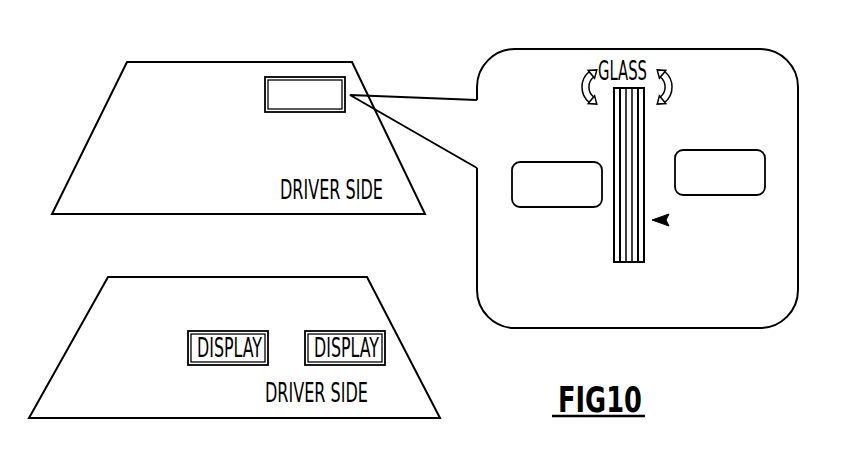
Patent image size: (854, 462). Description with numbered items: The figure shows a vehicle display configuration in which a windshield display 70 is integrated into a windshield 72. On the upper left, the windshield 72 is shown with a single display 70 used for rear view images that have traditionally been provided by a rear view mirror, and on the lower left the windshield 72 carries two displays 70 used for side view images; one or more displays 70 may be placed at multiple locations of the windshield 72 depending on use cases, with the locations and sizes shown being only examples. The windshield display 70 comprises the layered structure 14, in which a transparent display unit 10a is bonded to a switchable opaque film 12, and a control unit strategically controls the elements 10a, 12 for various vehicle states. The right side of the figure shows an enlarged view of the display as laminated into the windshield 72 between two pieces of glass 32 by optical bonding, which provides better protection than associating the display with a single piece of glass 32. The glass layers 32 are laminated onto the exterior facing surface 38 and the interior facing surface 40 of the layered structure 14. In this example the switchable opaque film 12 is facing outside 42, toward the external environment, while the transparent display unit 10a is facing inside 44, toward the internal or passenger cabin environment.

The transparent display unit 10a is at (630, 263).
The switchable opaque film 12 is at (633, 263).
The layered structure 14 is at (667, 220).
The glass layer 32 is at (613, 138).
The exterior facing surface 38 is at (638, 245).
The interior facing surface 40 is at (623, 245).
The external environment 42 is at (733, 155).
The internal or passenger cabin environment 44 is at (542, 208).
The windshield display 70 is at (307, 77).
The windshield 72 is at (205, 82).